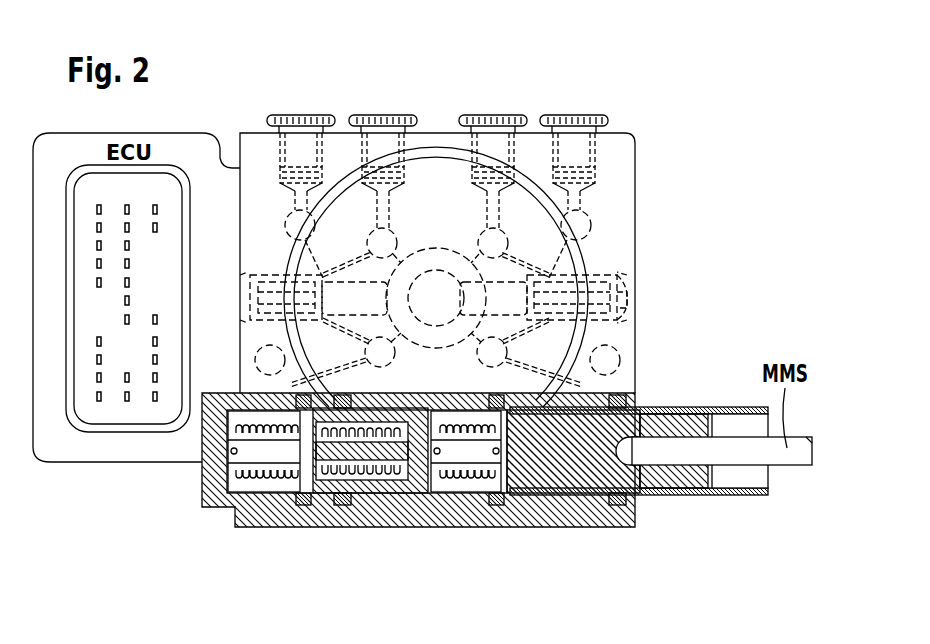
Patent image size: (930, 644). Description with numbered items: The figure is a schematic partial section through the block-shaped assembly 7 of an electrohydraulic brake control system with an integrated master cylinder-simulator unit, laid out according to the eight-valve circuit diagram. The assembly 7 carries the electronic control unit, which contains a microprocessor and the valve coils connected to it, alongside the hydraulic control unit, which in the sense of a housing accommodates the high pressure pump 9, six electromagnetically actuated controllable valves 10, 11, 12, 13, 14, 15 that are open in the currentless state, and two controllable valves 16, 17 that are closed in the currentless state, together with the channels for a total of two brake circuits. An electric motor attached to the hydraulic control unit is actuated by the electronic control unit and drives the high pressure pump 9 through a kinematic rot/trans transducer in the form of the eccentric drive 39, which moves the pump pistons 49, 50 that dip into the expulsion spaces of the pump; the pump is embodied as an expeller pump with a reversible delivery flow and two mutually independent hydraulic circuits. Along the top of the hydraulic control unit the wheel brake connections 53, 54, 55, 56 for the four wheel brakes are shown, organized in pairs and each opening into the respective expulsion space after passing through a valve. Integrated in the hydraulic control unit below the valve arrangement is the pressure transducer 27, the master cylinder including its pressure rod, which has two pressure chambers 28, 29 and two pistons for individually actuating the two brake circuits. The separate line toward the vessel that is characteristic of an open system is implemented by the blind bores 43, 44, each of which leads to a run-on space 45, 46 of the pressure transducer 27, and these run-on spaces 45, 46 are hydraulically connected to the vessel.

The assembly 7 is at (640, 199).
The high pressure pump 9 is at (612, 300).
The controllable valve 10 is at (395, 355).
The controllable valve 11 is at (296, 228).
The controllable valve 12 is at (388, 236).
The controllable valve 13 is at (503, 360).
The controllable valve 14 is at (584, 231).
The controllable valve 15 is at (486, 236).
The controllable valve 16 is at (266, 358).
The controllable valve 17 is at (608, 362).
The pressure transducer 27 is at (735, 505).
The pressure chamber 28 is at (265, 490).
The pressure chamber 29 is at (462, 490).
The eccentric drive 39 is at (426, 278).
The blind bore 43 is at (300, 386).
The blind bore 44 is at (585, 386).
The run-on space 45 is at (325, 496).
The run-on space 46 is at (521, 496).
The pump piston 49 is at (363, 310).
The pump element 50 is at (520, 310).
The wheel brake connection 53 is at (297, 150).
The wheel brake connection 54 is at (376, 150).
The wheel brake connection 55 is at (499, 150).
The wheel brake connection 56 is at (580, 150).